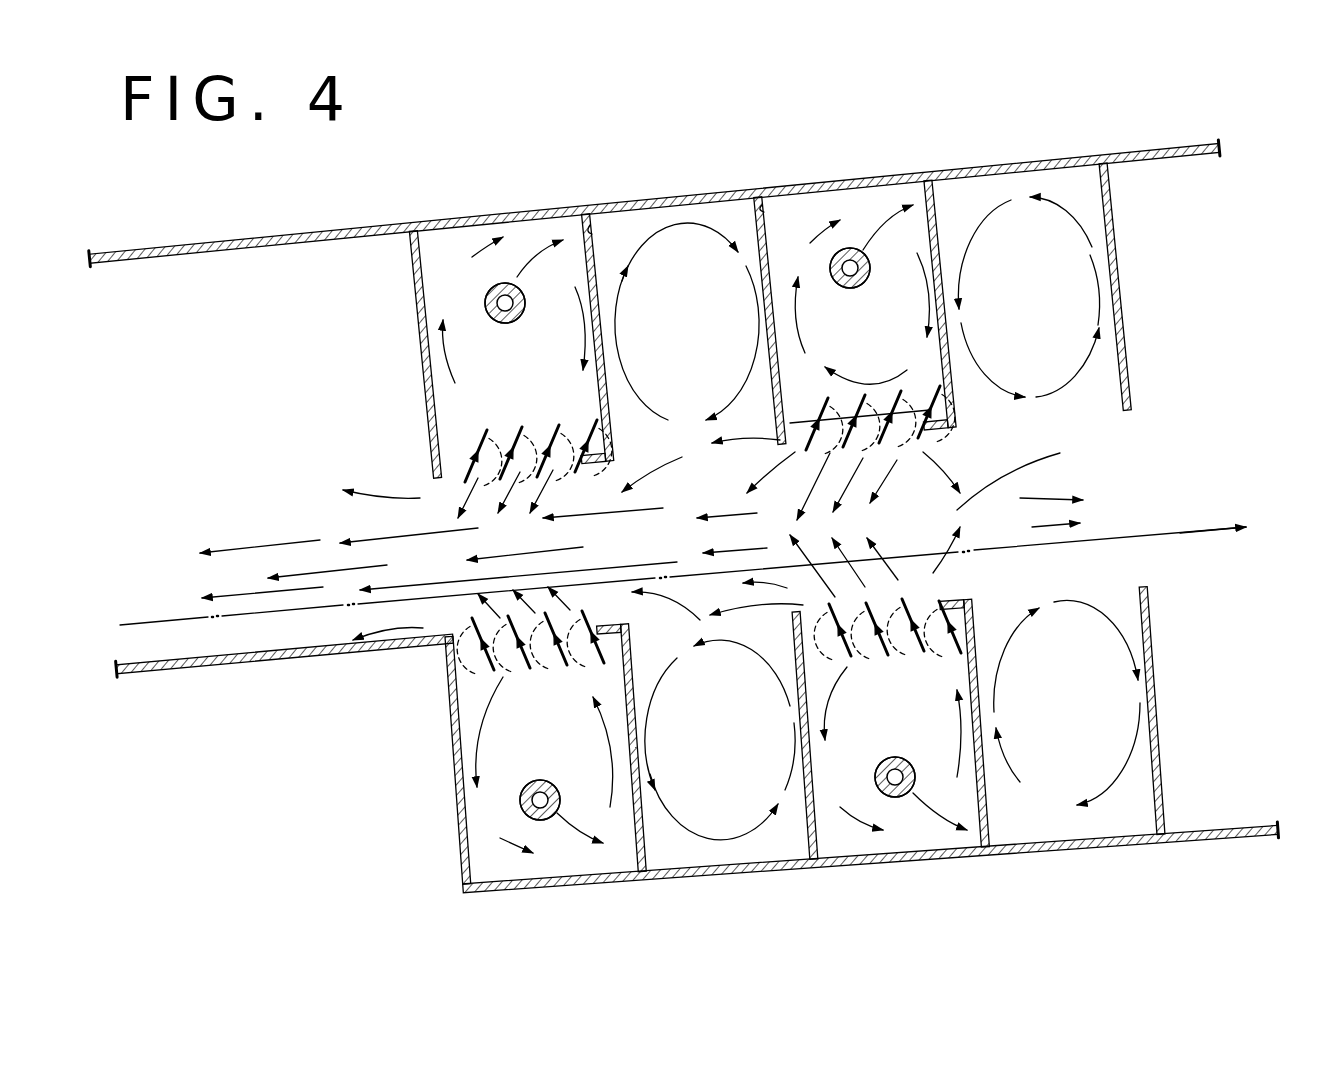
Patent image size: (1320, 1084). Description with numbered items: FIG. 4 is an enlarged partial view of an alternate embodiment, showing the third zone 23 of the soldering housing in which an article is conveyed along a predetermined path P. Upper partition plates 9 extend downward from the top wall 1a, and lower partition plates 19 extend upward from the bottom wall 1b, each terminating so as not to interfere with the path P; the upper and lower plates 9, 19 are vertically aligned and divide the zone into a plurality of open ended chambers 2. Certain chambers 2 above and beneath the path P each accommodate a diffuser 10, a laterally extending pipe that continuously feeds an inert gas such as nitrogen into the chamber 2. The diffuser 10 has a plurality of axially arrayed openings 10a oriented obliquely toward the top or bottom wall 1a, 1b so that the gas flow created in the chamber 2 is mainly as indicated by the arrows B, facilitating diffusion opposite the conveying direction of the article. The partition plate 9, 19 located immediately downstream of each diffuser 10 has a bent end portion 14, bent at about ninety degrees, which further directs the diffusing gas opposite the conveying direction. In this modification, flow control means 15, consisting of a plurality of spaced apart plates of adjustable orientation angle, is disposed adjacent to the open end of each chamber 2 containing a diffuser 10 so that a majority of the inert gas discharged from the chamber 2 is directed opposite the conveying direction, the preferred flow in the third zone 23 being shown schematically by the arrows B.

The top wall 1a is at (831, 197).
The bottom wall 1b is at (574, 874).
The chamber 2 is at (440, 247).
The upper partition plate 9 is at (582, 226).
The diffuser 10 is at (507, 325).
The opening 10a is at (522, 296).
The bent end portion 14 is at (940, 440).
The flow control means 15 is at (510, 423).
The lower partition plate 19 is at (650, 847).
The third zone 23 is at (1068, 471).
The path P is at (1170, 537).
The arrow B is at (587, 340).